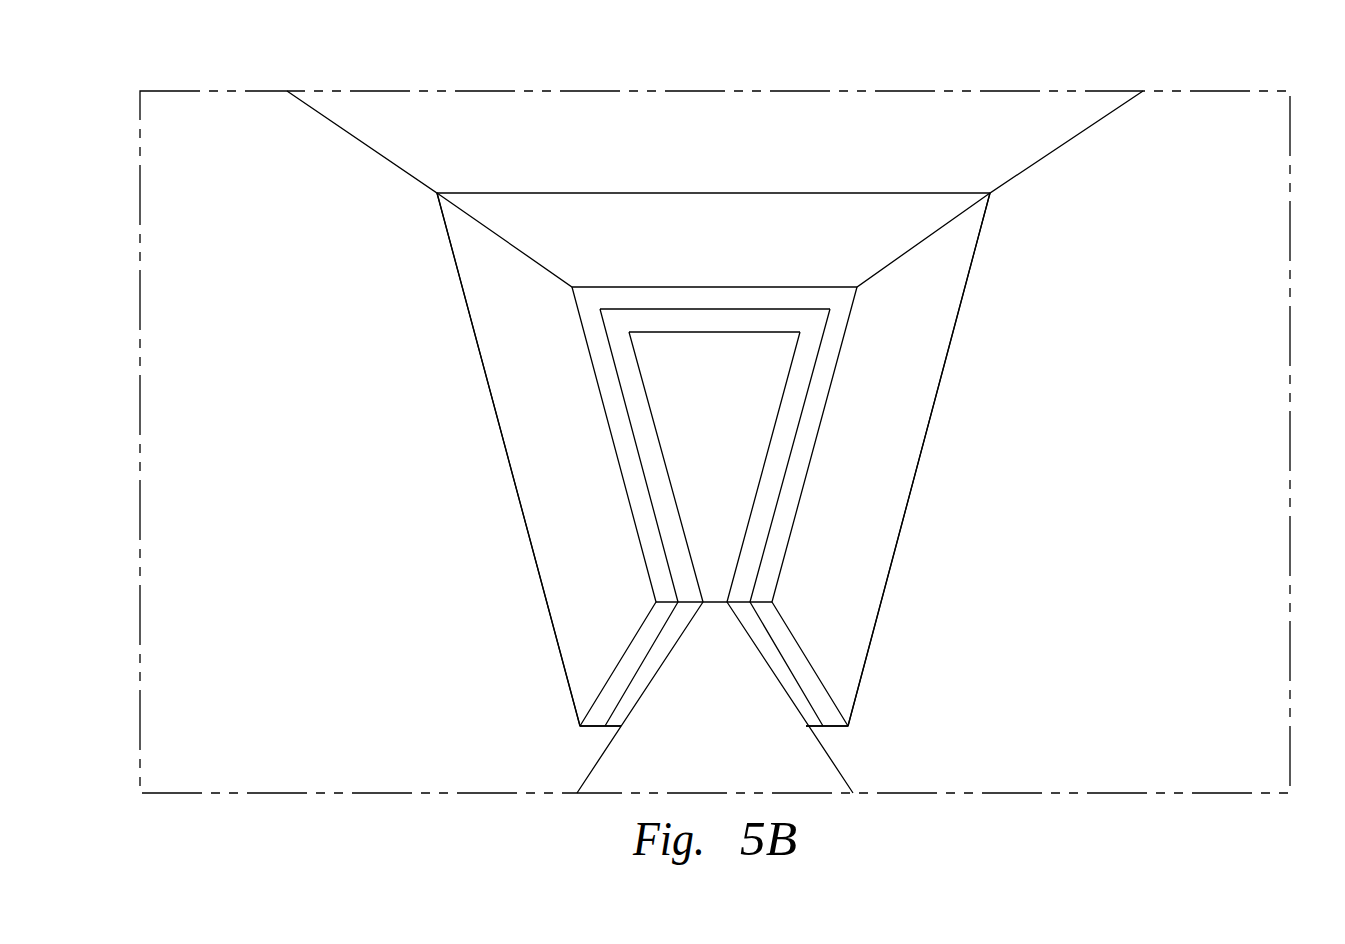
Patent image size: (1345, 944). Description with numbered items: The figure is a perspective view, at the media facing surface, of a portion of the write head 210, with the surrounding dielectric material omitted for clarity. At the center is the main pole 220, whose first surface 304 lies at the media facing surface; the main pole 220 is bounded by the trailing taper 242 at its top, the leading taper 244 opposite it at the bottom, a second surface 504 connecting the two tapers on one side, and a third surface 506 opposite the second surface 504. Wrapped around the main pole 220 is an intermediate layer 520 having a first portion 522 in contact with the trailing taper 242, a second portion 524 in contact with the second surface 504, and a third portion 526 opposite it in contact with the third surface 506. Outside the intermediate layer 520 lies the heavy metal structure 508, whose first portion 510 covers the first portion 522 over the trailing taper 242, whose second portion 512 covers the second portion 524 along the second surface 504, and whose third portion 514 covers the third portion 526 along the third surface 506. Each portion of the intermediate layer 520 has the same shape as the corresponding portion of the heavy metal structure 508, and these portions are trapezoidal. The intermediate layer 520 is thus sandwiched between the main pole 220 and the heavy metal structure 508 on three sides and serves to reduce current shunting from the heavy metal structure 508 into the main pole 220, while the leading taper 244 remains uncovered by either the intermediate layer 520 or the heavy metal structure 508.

The write head 210 is at (1236, 53).
The trailing taper 242 is at (735, 156).
The leading taper 244 is at (735, 745).
The heavy metal structure 508 is at (427, 496).
The second portion 512 is at (553, 577).
The third portion 514 is at (875, 577).
The first portion 510 is at (735, 253).
The intermediate layer 520 is at (658, 316).
The first portion 522 is at (772, 320).
The second portion 524 is at (642, 418).
The third portion 526 is at (787, 418).
The second surface 504 is at (642, 365).
The third surface 506 is at (783, 392).
The main pole 220 is at (723, 503).
The first surface 304 is at (735, 457).